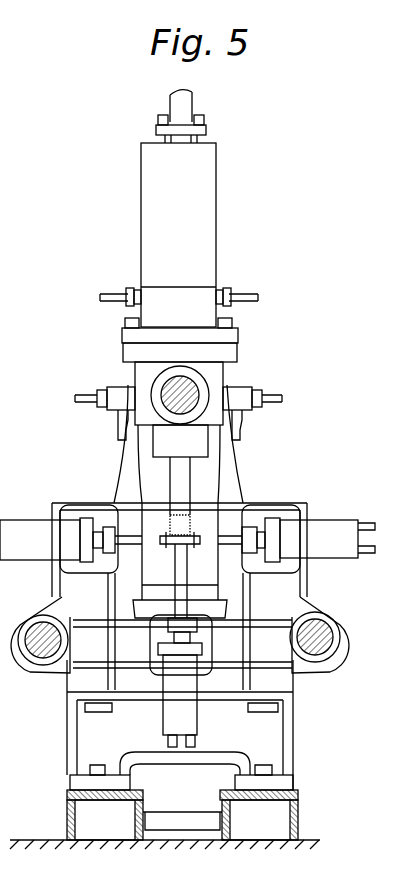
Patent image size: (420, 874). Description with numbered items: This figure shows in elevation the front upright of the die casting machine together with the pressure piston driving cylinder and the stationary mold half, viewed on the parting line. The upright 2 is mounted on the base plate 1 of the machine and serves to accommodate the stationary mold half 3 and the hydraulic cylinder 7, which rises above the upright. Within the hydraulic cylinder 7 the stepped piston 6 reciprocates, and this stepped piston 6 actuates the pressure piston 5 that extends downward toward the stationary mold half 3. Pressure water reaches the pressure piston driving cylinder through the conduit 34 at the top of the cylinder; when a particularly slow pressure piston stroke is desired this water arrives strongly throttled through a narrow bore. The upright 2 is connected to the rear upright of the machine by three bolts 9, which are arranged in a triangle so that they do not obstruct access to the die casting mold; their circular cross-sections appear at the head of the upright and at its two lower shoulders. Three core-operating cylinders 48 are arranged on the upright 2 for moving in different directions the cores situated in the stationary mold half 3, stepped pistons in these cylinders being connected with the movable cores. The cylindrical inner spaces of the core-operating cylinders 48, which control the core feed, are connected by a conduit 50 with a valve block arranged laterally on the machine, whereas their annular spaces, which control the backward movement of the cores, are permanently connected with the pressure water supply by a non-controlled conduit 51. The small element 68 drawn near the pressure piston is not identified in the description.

The base plate 1 is at (66, 815).
The upright 2 is at (236, 478).
The stationary mold half 3 is at (213, 570).
The pressure piston 5 is at (190, 485).
The stepped piston 6 is at (157, 450).
The hydraulic cylinder 7 is at (210, 222).
The bolts 9 is at (196, 386).
The conduit 34 is at (190, 108).
The core-operating cylinders 48 is at (8, 525).
The conduit 50 is at (240, 432).
The non-controlled conduit 51 is at (118, 434).
The valve 68 is at (170, 522).